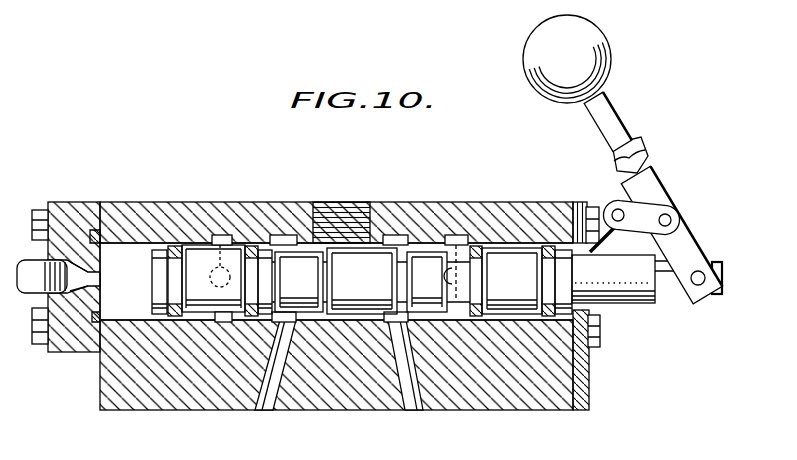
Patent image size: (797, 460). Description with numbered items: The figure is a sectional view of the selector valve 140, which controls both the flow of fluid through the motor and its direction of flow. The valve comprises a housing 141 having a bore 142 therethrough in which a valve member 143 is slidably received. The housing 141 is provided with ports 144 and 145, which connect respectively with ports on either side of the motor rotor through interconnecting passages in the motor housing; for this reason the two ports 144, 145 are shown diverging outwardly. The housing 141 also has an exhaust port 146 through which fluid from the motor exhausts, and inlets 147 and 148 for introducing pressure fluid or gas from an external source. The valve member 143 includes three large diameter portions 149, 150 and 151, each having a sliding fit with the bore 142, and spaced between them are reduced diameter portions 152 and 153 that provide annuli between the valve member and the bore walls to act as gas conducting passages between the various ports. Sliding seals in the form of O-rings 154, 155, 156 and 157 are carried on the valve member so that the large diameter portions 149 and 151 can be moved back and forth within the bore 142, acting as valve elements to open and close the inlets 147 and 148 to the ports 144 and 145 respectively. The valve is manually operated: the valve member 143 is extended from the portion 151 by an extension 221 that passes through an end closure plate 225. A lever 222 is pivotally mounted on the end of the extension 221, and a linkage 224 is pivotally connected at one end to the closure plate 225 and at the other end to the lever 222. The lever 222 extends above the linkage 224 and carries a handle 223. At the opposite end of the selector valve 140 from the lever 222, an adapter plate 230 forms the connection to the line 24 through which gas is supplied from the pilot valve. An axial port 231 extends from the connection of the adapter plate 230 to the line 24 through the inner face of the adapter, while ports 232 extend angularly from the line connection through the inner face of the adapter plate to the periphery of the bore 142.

The line 24 is at (38, 264).
The selector valve 140 is at (99, 396).
The housing 141 is at (295, 213).
The bore 142 is at (125, 240).
The valve member 143 is at (388, 243).
The port 144 is at (255, 411).
The port 145 is at (413, 412).
The exhaust port 146 is at (350, 202).
The inlet 147 is at (225, 238).
The inlet 148 is at (458, 237).
The large diameter portion 149 is at (199, 256).
The large diameter portion 150 is at (377, 273).
The large diameter portion 151 is at (525, 276).
The reduced diameter portion 152 is at (317, 276).
The reduced diameter portion 153 is at (442, 275).
The O-ring 154 is at (176, 243).
The O-ring 155 is at (256, 245).
The O-ring 156 is at (474, 245).
The O-ring 157 is at (547, 250).
The extension 221 is at (622, 305).
The lever 222 is at (690, 243).
The handle 223 is at (597, 40).
The linkage 224 is at (647, 210).
The end closure plate 225 is at (592, 371).
The adapter plate 230 is at (76, 198).
The axial port 231 is at (95, 280).
The port 232 is at (86, 254).